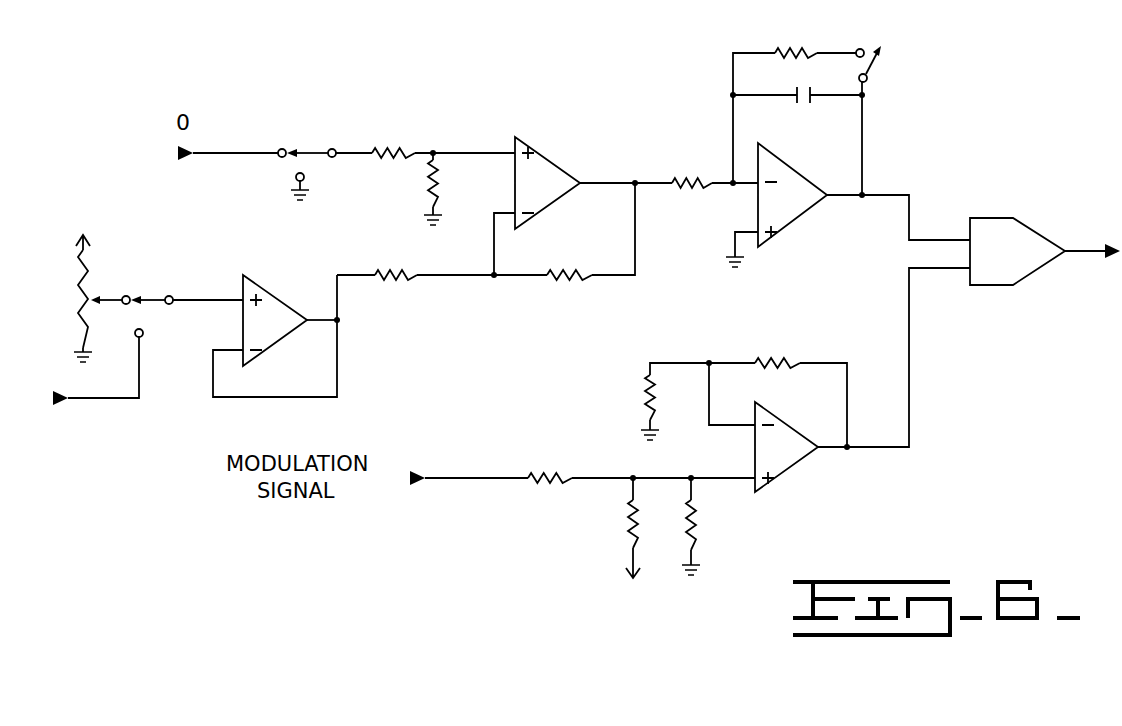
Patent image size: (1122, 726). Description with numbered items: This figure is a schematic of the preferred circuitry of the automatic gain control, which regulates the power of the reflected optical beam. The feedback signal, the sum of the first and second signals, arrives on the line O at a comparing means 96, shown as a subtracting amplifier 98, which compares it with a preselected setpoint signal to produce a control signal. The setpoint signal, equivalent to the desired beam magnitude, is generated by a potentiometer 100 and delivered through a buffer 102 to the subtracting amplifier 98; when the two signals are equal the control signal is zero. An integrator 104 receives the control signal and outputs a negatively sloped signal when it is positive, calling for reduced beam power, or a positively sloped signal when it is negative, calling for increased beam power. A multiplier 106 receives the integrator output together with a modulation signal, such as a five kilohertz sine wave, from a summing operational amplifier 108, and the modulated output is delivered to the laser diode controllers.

The comparing means 96 is at (543, 124).
The subtracting amplifier 98 is at (593, 181).
The potentiometer 100 is at (112, 284).
The buffer 102 is at (276, 324).
The integrator 104 is at (821, 156).
The multiplier 106 is at (1045, 242).
The summing operational amplifier 108 is at (697, 439).